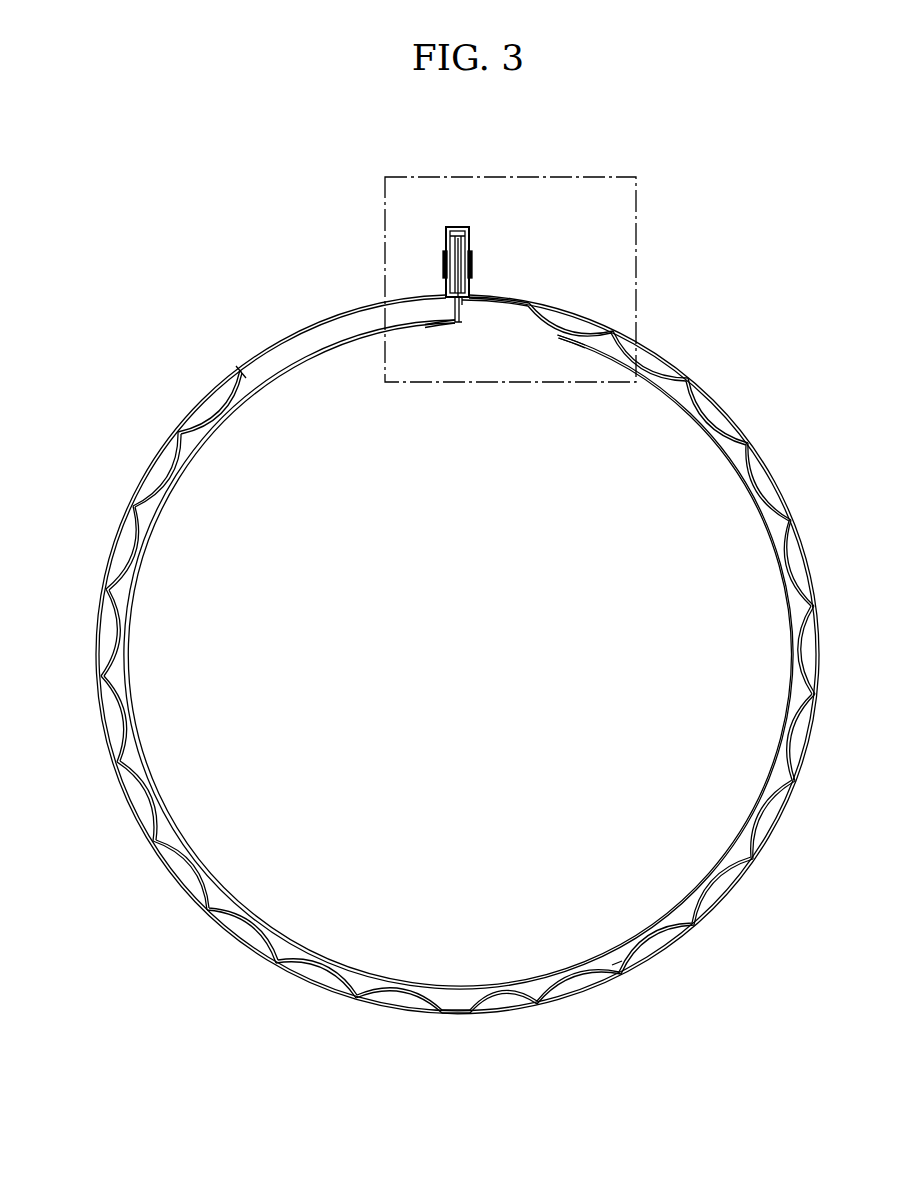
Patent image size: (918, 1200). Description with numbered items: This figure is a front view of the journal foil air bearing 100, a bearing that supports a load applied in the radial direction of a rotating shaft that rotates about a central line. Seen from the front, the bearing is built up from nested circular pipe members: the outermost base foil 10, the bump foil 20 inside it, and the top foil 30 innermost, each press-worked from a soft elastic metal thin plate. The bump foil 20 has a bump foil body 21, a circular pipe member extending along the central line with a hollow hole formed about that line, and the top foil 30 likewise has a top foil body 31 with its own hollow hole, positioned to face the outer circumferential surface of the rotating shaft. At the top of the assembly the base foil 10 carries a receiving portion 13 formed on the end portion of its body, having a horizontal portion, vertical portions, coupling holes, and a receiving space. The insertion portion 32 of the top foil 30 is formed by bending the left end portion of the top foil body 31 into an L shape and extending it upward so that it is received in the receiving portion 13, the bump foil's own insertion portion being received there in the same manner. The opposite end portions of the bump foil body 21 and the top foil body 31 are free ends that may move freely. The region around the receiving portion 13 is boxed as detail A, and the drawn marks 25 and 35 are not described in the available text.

The journal foil air bearing 100 is at (191, 306).
The base foil 10 is at (332, 308).
The receiving portion 13 is at (457, 228).
The bump foil 20 is at (667, 945).
The bump foil body 21 is at (700, 397).
The strip end 25 is at (243, 375).
The top foil 30 is at (620, 964).
The top foil body 31 is at (409, 331).
The insertion portion 32 is at (463, 316).
The inner ring second end 35 is at (559, 340).
The enlarged region A is at (642, 241).